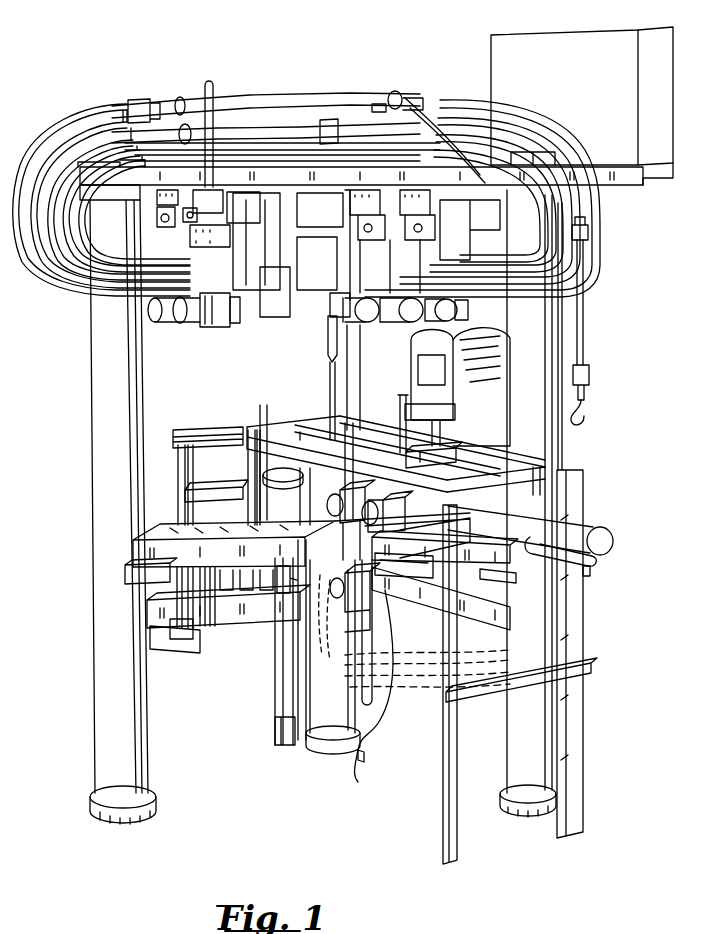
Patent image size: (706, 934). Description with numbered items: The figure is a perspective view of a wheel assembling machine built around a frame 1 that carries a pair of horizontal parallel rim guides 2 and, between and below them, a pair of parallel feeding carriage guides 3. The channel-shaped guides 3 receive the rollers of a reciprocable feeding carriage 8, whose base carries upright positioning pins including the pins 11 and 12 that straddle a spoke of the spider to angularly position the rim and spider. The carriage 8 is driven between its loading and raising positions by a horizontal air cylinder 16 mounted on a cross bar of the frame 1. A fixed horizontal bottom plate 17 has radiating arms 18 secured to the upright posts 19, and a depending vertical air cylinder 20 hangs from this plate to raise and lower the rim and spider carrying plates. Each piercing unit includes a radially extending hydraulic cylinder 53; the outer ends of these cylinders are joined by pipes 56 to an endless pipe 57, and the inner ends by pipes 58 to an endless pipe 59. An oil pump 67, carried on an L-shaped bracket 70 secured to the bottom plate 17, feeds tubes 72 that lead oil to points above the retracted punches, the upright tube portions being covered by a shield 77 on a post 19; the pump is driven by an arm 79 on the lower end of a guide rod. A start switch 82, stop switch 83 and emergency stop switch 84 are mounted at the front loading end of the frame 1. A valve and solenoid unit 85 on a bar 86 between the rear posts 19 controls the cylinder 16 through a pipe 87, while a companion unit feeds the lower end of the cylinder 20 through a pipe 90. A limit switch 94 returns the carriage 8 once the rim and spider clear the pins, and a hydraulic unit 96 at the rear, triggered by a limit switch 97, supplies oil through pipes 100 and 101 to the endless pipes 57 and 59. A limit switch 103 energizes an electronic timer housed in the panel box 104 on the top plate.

The frame 1 is at (605, 490).
The rim guides 2 is at (463, 441).
The feeding carriage guides 3 is at (552, 487).
The feeding carriage 8 is at (391, 455).
The positioning pin 11 is at (403, 419).
The positioning pin 12 is at (441, 426).
The air cylinder 16 is at (600, 510).
The bottom plate 17 is at (245, 513).
The radiating arms 18 is at (165, 535).
The upright posts 19 is at (96, 496).
The air cylinder 20 is at (338, 712).
The hydraulic cylinder 53 is at (204, 318).
The pipes 56 is at (130, 291).
The endless pipe 57 is at (255, 98).
The pipes 58 is at (171, 281).
The endless pipe 59 is at (273, 128).
The oil pump 67 is at (232, 635).
The L-shaped bracket 70 is at (222, 660).
The tube 72 is at (258, 584).
The shield 77 is at (330, 393).
The arm 79 is at (362, 702).
The start switch 82 is at (387, 511).
The stop switch 83 is at (355, 597).
The emergency stop switch 84 is at (351, 520).
The valve and solenoid unit 85 is at (410, 568).
The bar 86 is at (432, 600).
The pipe 87 is at (583, 572).
The pipe 90 is at (356, 755).
The limit switch 94 is at (287, 594).
The hydraulic unit 96 is at (586, 350).
The limit switch 97 is at (357, 114).
The pipe 100 is at (488, 148).
The pipe 101 is at (507, 202).
The limit switch 103 is at (279, 729).
The panel box 104 is at (498, 67).